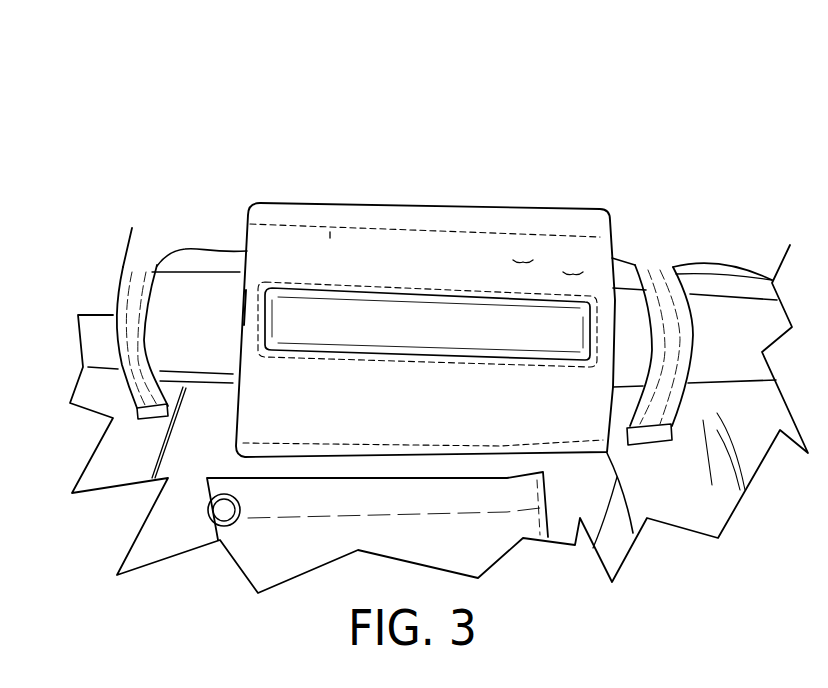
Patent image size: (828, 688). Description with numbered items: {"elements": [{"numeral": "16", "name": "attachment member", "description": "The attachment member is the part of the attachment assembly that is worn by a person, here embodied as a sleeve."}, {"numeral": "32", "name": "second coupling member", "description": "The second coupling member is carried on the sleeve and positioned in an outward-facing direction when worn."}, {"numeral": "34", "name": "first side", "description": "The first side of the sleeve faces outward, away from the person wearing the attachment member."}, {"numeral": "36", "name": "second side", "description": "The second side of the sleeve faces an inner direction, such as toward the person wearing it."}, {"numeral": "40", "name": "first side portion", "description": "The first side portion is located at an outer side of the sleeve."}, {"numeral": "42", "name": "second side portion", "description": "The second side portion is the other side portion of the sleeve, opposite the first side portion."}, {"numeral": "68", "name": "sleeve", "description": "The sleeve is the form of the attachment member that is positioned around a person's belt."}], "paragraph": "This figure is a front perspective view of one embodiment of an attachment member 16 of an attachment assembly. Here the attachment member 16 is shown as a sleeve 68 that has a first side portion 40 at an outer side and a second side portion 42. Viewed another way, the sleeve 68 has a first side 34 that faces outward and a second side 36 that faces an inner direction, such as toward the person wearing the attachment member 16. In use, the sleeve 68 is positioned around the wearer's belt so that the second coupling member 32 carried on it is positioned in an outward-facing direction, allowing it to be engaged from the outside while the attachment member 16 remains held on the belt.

The garment waistband 16 is at (223, 417).
The transparent window 32 is at (390, 320).
The closure 34 is at (573, 267).
The hidden fastener 36 is at (523, 255).
The pouch 40 is at (227, 230).
The stitch line 42 is at (330, 222).
The front panel 68 is at (248, 308).